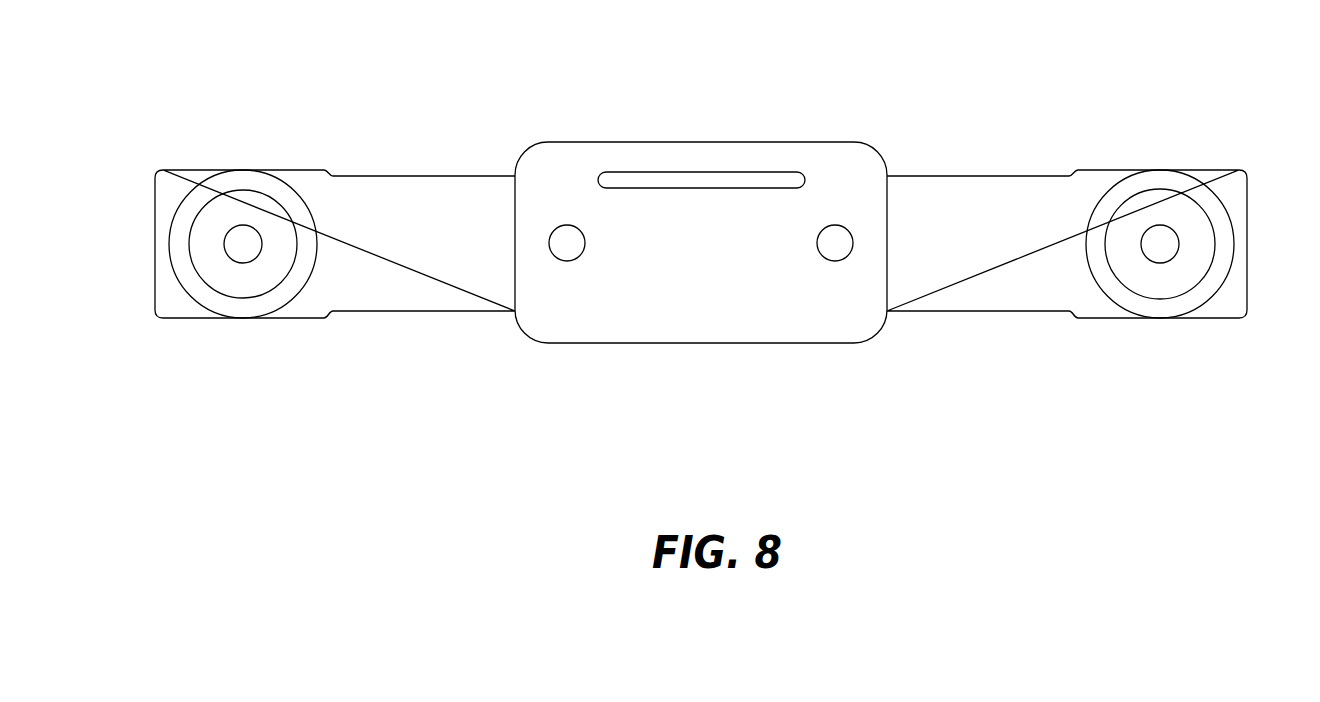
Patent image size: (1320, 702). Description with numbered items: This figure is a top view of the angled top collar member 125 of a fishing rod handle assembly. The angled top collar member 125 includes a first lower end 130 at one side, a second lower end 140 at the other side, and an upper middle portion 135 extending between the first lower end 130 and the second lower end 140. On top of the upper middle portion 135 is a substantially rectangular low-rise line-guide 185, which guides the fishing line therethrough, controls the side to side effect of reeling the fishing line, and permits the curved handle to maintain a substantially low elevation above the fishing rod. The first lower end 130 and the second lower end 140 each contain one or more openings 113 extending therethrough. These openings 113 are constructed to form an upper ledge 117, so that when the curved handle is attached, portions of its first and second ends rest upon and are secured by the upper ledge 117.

The angled top collar member 125 is at (449, 111).
The upper middle portion 135 is at (850, 158).
The low-rise line-guide 185 is at (734, 190).
The first lower end 130 is at (195, 302).
The second lower end 140 is at (1217, 300).
The upper ledge 117 is at (208, 237).
The openings 113 is at (243, 236).